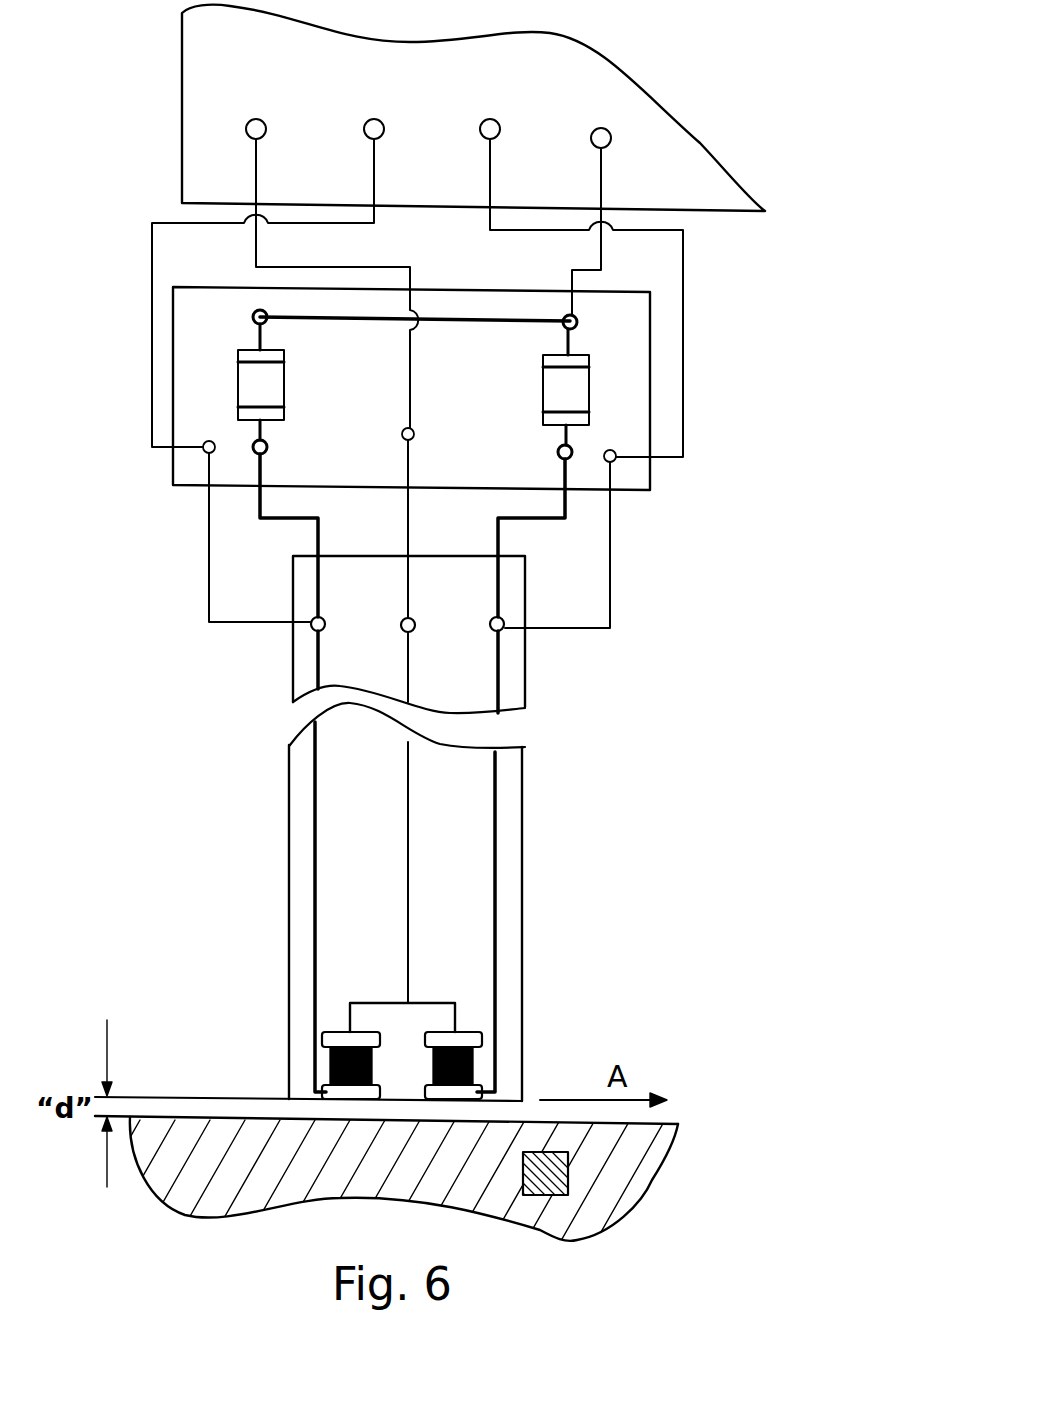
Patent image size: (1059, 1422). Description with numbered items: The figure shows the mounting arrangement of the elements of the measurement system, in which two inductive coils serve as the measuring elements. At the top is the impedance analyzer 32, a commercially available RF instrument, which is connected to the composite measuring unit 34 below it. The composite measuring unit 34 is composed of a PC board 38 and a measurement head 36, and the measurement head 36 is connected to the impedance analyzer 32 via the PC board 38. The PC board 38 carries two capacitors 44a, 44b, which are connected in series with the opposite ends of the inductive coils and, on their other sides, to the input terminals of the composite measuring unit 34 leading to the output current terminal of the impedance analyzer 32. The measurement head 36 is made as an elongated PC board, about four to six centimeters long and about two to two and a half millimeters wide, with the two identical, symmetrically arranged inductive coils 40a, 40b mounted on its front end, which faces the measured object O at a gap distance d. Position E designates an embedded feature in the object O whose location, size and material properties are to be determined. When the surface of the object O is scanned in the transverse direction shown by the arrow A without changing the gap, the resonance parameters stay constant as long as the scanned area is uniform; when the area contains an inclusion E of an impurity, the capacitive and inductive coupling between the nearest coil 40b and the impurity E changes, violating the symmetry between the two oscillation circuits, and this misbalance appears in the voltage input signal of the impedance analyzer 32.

The impedance analyzer 32 is at (702, 143).
The PC board 38 is at (421, 383).
The capacitor 44a is at (237, 388).
The capacitor 44b is at (593, 390).
The composite measuring unit 34 is at (642, 672).
The measurement head 36 is at (525, 878).
The inductive coil 40a is at (330, 1062).
The inductive coil 40b is at (493, 1062).
The embedded feature E is at (568, 1177).
The measured object O is at (573, 1222).